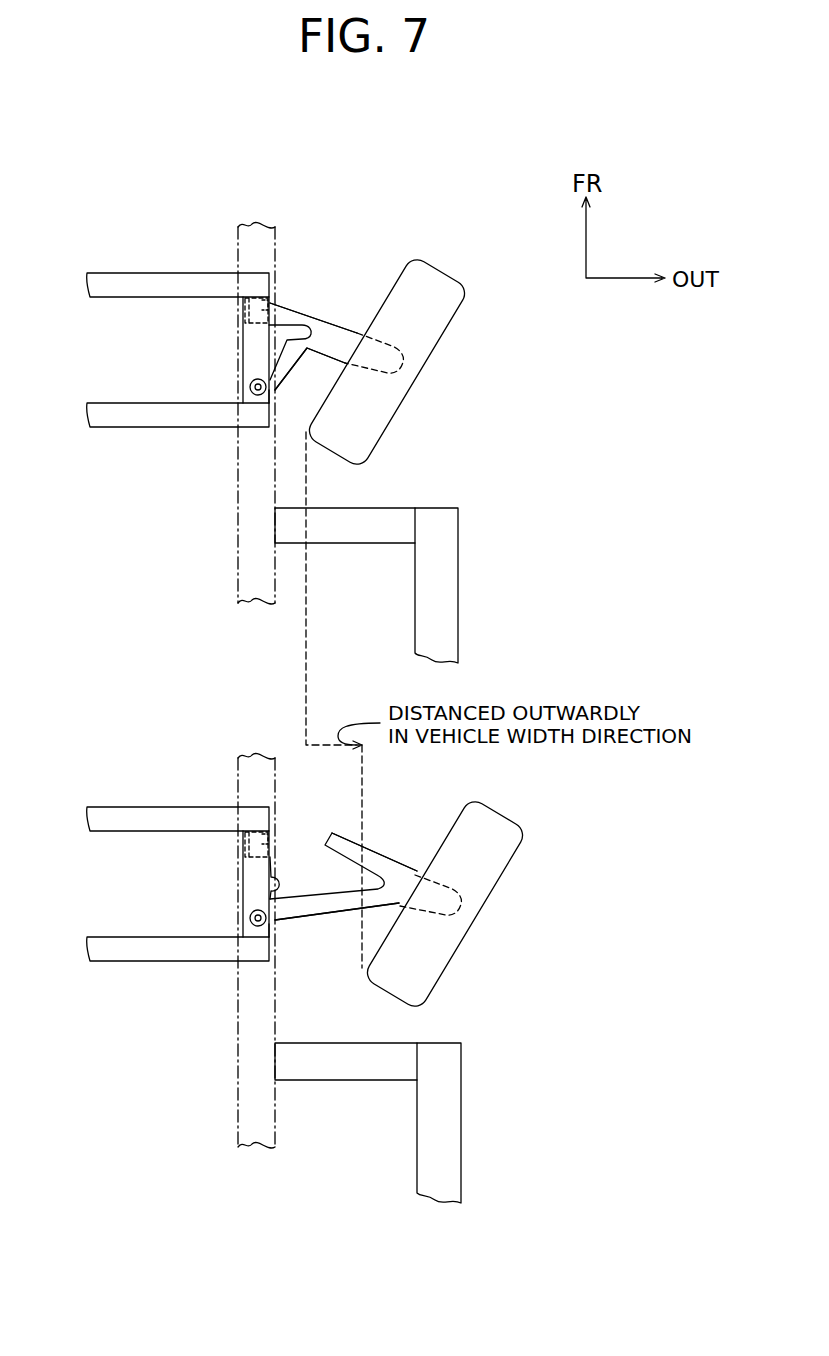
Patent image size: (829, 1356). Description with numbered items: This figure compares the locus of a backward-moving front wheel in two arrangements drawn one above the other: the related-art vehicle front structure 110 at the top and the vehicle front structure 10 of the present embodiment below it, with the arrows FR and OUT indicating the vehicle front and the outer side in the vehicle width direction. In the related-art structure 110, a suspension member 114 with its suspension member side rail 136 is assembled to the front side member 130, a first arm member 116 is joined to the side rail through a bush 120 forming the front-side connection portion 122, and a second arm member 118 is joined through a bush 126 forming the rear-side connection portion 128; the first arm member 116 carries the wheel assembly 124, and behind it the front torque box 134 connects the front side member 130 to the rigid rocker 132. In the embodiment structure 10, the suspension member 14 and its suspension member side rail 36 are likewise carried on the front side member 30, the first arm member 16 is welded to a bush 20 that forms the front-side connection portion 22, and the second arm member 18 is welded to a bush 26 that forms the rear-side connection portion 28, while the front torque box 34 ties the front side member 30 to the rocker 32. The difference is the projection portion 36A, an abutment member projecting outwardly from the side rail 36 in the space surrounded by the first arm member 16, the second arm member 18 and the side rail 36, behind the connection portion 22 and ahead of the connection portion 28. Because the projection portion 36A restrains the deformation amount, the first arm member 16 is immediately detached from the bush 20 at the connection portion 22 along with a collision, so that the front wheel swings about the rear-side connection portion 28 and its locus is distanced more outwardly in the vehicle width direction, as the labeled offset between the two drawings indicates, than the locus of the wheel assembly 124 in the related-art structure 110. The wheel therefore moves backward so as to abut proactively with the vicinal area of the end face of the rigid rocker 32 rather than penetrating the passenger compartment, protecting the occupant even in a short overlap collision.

The vehicle front structure 10 is at (576, 851).
The suspension member 14 is at (136, 788).
The first arm member 16 is at (385, 857).
The second arm member 18 is at (331, 913).
The bush 20 is at (247, 853).
The connection portion 22 is at (266, 846).
The bush 26 is at (249, 917).
The connection portion 28 is at (283, 923).
The front side member 30 is at (245, 750).
The rocker 32 is at (462, 1118).
The front torque box 34 is at (348, 1082).
The suspension member side rail 36 is at (242, 888).
The projection portion 36A is at (281, 885).
The vehicle front structure 110 is at (387, 228).
The suspension member 114 is at (134, 253).
The first arm member 116 is at (325, 321).
The second arm member 118 is at (305, 353).
The bush 120 is at (240, 322).
The connection portion 122 is at (270, 306).
The wheel assembly 124 is at (455, 300).
The bush 126 is at (249, 387).
The connection portion 128 is at (268, 402).
The front side member 130 is at (245, 218).
The rocker 132 is at (460, 582).
The front torque box 134 is at (347, 545).
The suspension member side rail 136 is at (242, 357).